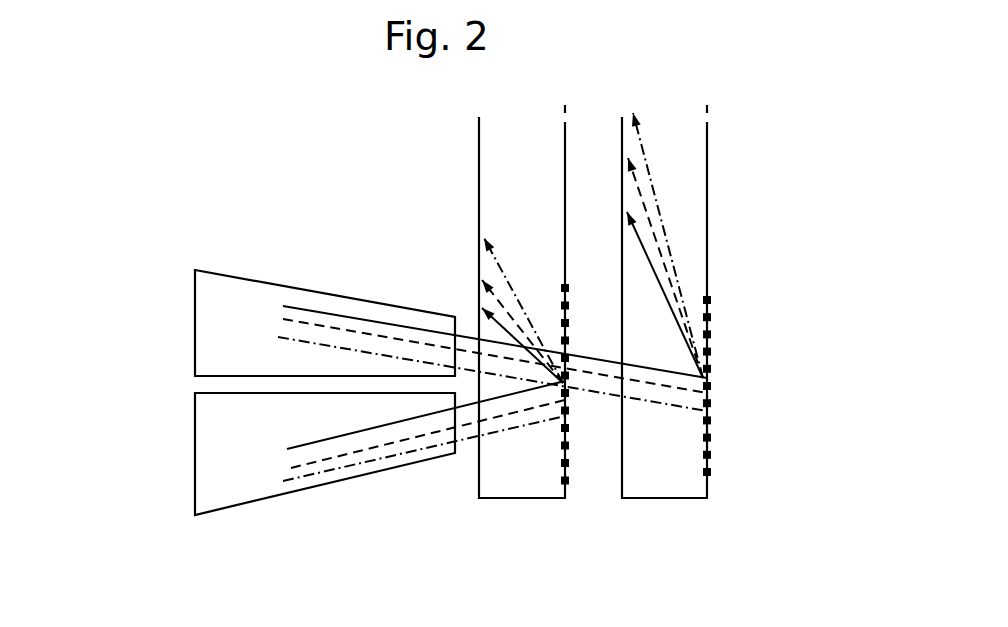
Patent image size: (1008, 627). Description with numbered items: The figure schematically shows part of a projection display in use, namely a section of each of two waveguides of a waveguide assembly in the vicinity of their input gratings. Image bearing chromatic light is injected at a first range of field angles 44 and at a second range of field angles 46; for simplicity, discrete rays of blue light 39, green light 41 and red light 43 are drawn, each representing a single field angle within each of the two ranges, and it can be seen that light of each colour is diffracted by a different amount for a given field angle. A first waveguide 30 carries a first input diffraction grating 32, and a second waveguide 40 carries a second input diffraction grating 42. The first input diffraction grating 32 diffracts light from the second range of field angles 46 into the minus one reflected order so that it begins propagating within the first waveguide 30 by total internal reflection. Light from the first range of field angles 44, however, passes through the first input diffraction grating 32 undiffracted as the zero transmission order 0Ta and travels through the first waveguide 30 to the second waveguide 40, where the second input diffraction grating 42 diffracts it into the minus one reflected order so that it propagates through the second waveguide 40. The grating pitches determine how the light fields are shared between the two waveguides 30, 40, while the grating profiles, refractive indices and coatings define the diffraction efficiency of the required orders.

The first waveguide 30 is at (478, 137).
The second waveguide 40 is at (708, 129).
The first input diffraction grating 32 is at (567, 474).
The second input diffraction grating 42 is at (711, 455).
The first range of field angles 44 is at (195, 287).
The second range of field angles 46 is at (195, 450).
The blue light 39 is at (297, 307).
The green light 41 is at (283, 319).
The red light 43 is at (280, 337).
The zero transmission order 0Ta is at (597, 398).